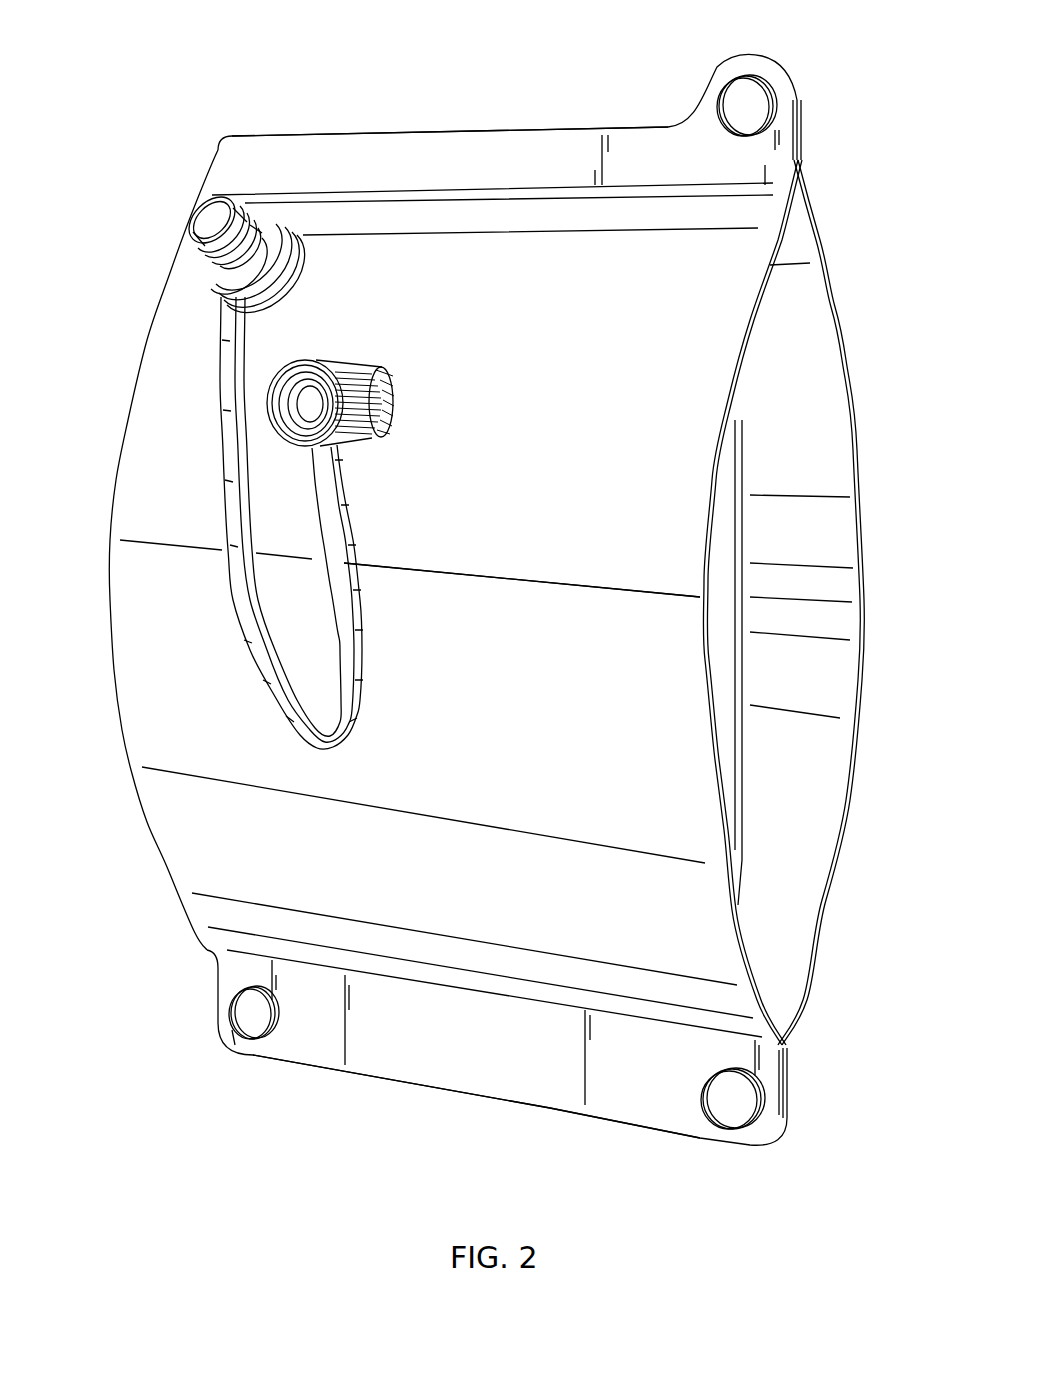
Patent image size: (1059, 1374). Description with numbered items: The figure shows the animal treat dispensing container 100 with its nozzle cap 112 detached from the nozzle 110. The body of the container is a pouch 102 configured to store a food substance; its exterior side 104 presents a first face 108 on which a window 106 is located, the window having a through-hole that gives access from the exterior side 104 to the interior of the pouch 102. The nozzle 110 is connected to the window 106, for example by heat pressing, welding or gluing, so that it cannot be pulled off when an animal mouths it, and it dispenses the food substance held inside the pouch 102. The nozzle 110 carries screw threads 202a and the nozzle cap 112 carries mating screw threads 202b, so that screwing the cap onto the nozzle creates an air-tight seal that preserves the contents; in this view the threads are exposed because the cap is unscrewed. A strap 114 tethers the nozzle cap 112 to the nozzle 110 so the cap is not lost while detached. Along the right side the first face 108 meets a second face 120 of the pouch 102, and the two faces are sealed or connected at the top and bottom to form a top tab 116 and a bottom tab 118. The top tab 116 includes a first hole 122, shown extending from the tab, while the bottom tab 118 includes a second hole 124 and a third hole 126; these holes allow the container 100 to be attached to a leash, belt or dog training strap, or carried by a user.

The animal treat dispensing container 100 is at (131, 21).
The pouch 102 is at (87, 273).
The exterior side 104 is at (838, 315).
The window 106 is at (310, 258).
The first face 108 is at (522, 543).
The nozzle 110 is at (207, 262).
The nozzle cap 112 is at (377, 400).
The strap 114 is at (257, 673).
The top tab 116 is at (485, 128).
The bottom tab 118 is at (493, 1100).
The second face 120 is at (841, 793).
The first hole 122 is at (750, 100).
The second hole 124 is at (255, 1015).
The third hole 126 is at (737, 1100).
The screw threads of the nozzle 202a is at (253, 223).
The screw threads of the nozzle cap 202b is at (317, 423).